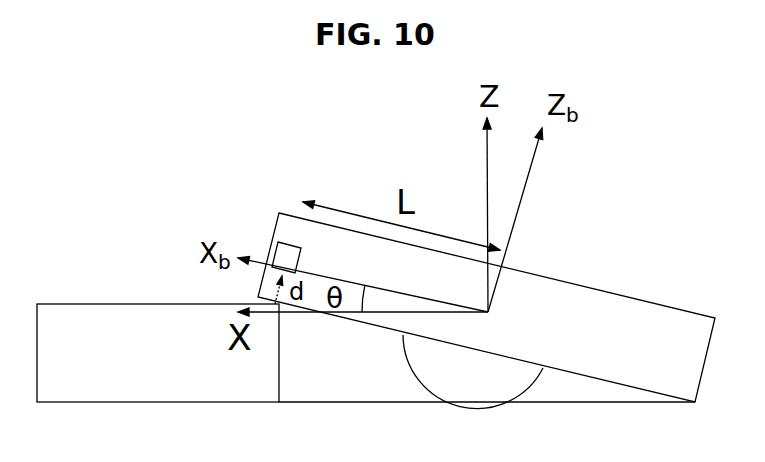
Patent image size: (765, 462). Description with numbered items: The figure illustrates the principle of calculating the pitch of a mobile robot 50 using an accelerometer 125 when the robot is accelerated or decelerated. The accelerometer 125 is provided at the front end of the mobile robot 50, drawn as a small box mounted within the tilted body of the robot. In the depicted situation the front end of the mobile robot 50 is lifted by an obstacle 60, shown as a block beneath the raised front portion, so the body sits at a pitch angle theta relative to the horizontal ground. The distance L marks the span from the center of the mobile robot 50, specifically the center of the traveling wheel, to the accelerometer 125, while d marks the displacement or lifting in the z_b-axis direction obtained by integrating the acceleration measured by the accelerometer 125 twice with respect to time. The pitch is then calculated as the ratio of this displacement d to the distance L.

The mobile robot 50 is at (640, 268).
The obstacle 60 is at (115, 304).
The accelerometer 125 is at (278, 245).